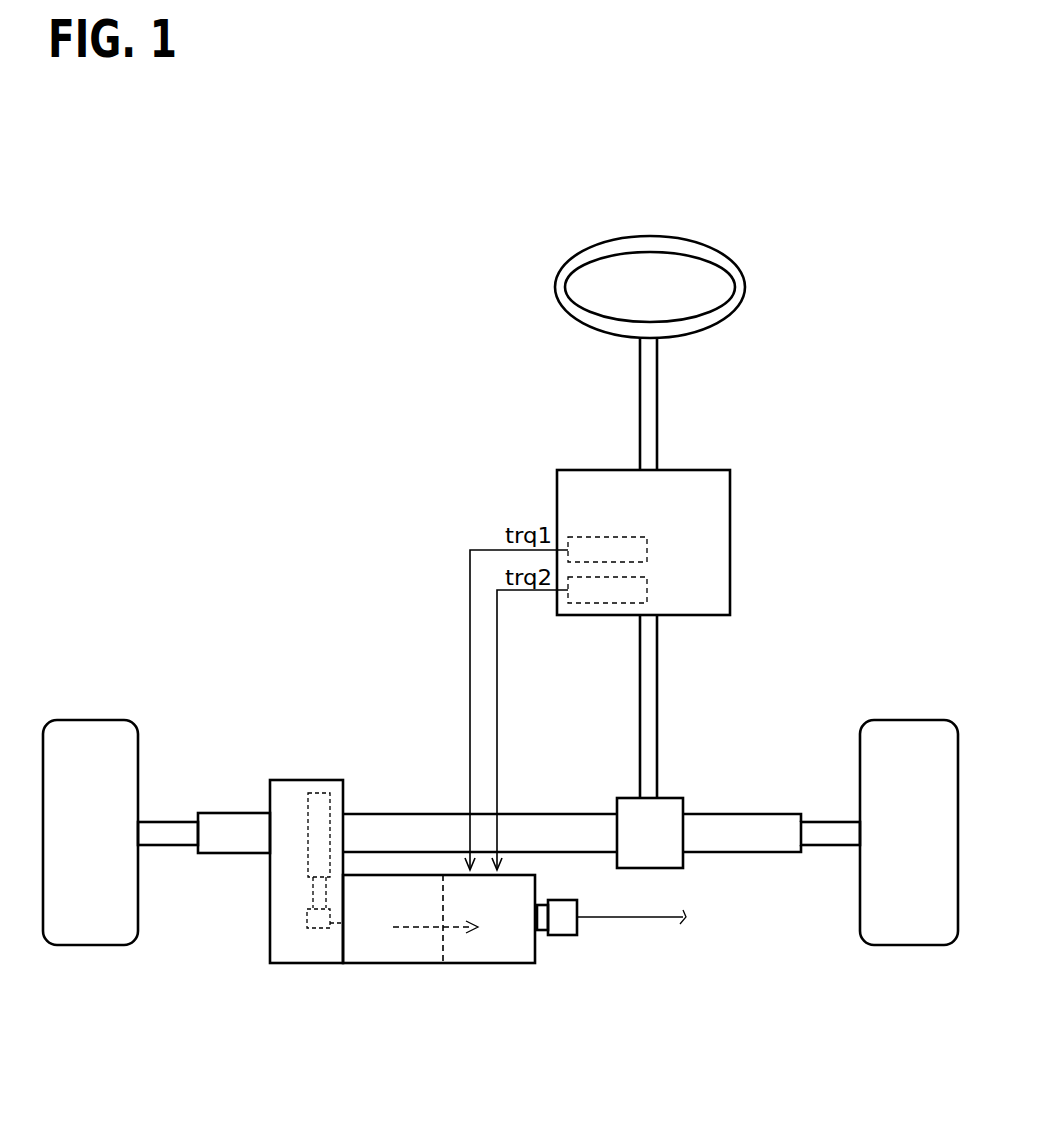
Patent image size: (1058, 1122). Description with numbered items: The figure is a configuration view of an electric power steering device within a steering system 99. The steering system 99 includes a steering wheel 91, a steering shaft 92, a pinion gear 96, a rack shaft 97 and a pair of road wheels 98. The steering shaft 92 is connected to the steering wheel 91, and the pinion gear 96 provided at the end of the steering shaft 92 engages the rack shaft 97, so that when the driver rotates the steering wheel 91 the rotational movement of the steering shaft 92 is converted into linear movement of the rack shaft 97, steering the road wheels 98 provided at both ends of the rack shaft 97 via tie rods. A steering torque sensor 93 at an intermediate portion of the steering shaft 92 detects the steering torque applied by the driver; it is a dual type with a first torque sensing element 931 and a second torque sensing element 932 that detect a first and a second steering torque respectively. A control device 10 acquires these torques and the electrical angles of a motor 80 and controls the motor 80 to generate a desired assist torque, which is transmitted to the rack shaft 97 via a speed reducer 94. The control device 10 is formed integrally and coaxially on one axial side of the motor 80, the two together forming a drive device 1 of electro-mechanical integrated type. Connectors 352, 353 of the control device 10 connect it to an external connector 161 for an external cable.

The drive device 1 is at (498, 969).
The control device 10 is at (468, 965).
The motor 80 is at (392, 965).
The steering wheel 91 is at (556, 280).
The steering shaft 92 is at (640, 413).
The steering torque sensor 93 is at (732, 519).
The first torque sensing element 931 is at (650, 550).
The second torque sensing element 932 is at (650, 590).
The speed reducer 94 is at (318, 780).
The pinion gear 96 is at (672, 798).
The rack shaft 97 is at (553, 814).
The road wheels 98 is at (93, 720).
The steering system 99 is at (245, 983).
The external connector 161 is at (570, 900).
The connector 352 is at (540, 938).
The connector 353 is at (562, 917).